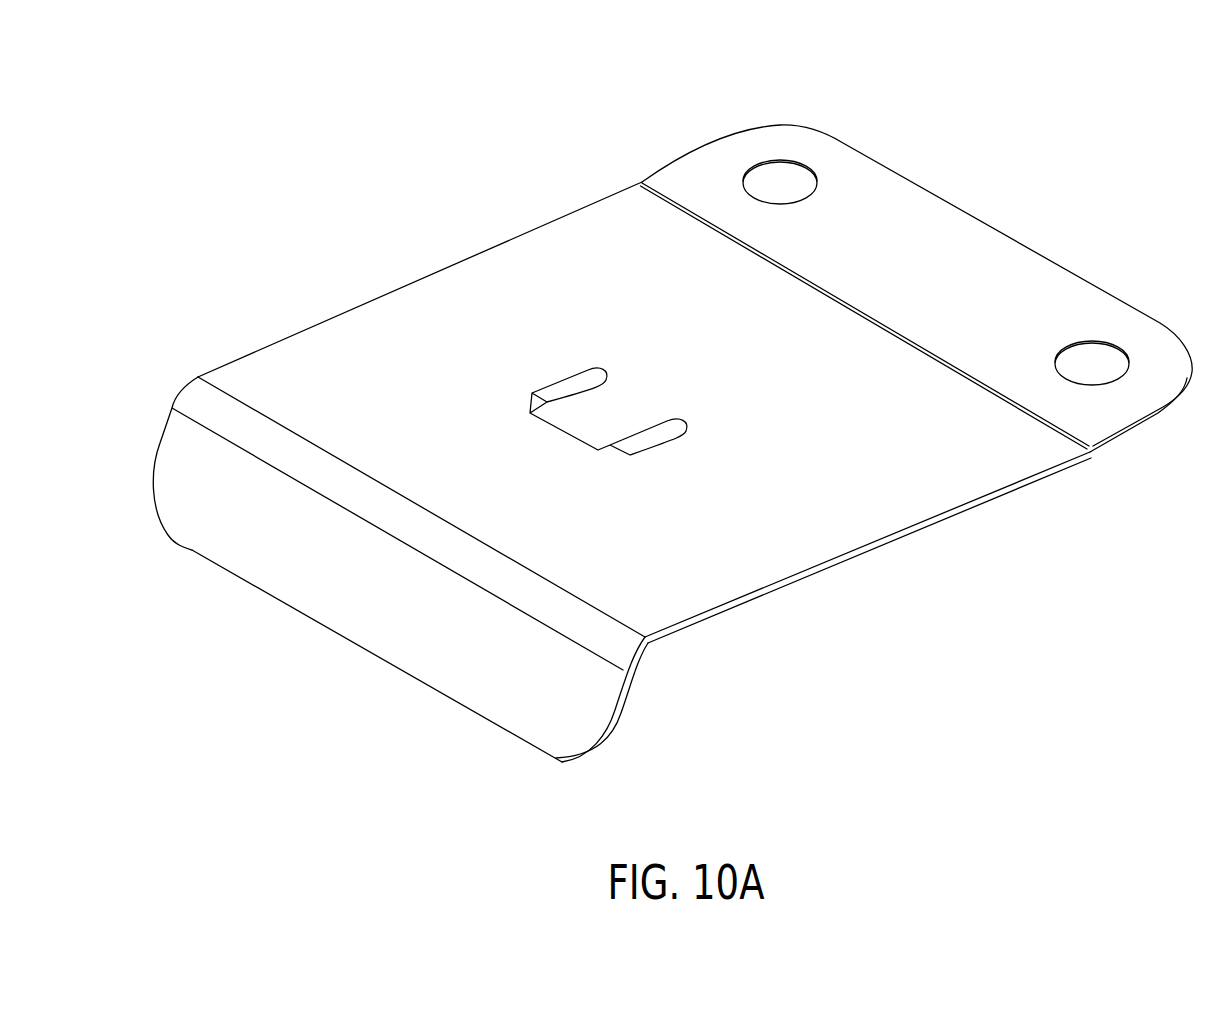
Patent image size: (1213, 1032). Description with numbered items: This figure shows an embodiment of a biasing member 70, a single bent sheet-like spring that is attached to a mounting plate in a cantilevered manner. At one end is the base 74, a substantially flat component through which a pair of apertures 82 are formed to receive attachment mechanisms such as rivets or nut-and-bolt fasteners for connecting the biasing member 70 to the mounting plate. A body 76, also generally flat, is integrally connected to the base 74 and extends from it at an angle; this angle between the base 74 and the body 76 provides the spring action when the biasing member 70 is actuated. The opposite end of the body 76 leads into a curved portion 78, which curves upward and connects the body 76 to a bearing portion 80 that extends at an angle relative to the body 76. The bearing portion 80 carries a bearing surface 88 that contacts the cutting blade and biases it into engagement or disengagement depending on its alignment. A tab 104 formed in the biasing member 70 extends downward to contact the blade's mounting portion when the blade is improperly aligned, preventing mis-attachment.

The biasing member 70 is at (603, 128).
The base 74 is at (1053, 280).
The body 76 is at (828, 528).
The curved portion 78 is at (623, 643).
The bearing portion 80 is at (497, 700).
The apertures 82 is at (790, 180).
The bearing surface 88 is at (407, 626).
The tab 104 is at (592, 422).